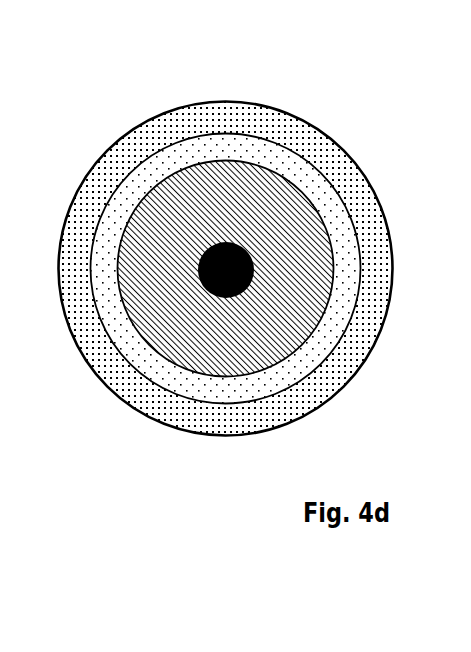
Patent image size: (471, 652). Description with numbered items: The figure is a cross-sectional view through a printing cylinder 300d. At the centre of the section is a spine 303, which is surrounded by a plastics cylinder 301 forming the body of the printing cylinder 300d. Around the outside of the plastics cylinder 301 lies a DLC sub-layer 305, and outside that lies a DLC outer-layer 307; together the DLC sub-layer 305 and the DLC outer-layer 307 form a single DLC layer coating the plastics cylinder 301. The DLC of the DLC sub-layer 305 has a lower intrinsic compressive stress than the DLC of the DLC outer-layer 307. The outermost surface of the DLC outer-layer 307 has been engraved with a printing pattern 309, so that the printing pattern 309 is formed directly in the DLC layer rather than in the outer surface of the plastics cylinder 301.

The printing cylinder 300d is at (205, 315).
The plastics cylinder 301 is at (172, 322).
The spine 303 is at (238, 242).
The DLC sub-layer 305 is at (172, 157).
The DLC outer-layer 307 is at (253, 422).
The printing pattern 309 is at (73, 183).